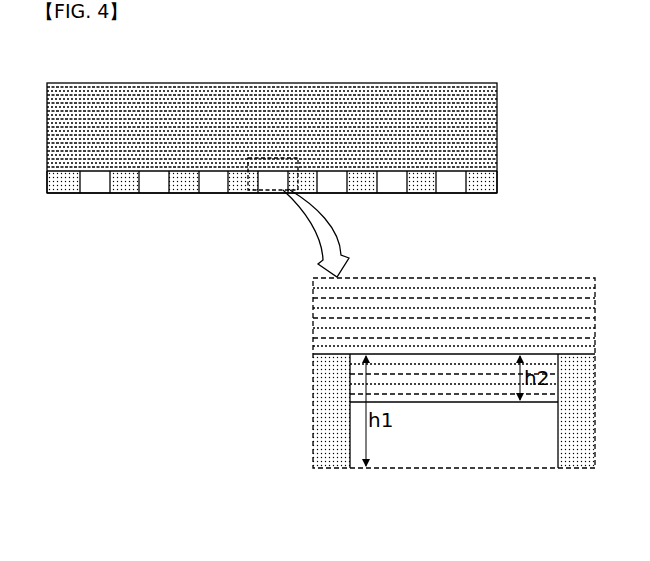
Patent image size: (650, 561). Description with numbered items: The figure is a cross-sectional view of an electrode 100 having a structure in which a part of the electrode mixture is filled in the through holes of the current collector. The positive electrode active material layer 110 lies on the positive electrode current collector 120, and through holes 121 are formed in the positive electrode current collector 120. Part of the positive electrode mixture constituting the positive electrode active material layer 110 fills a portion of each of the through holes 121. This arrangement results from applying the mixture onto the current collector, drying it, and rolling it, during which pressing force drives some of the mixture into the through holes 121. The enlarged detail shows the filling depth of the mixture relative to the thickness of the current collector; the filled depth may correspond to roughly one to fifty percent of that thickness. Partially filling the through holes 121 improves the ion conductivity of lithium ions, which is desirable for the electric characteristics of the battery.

The substrate structure 100 is at (571, 92).
The positive electrode active material layer 110 is at (480, 96).
The positive electrode current collector 120 is at (503, 177).
The through holes 121 is at (150, 190).